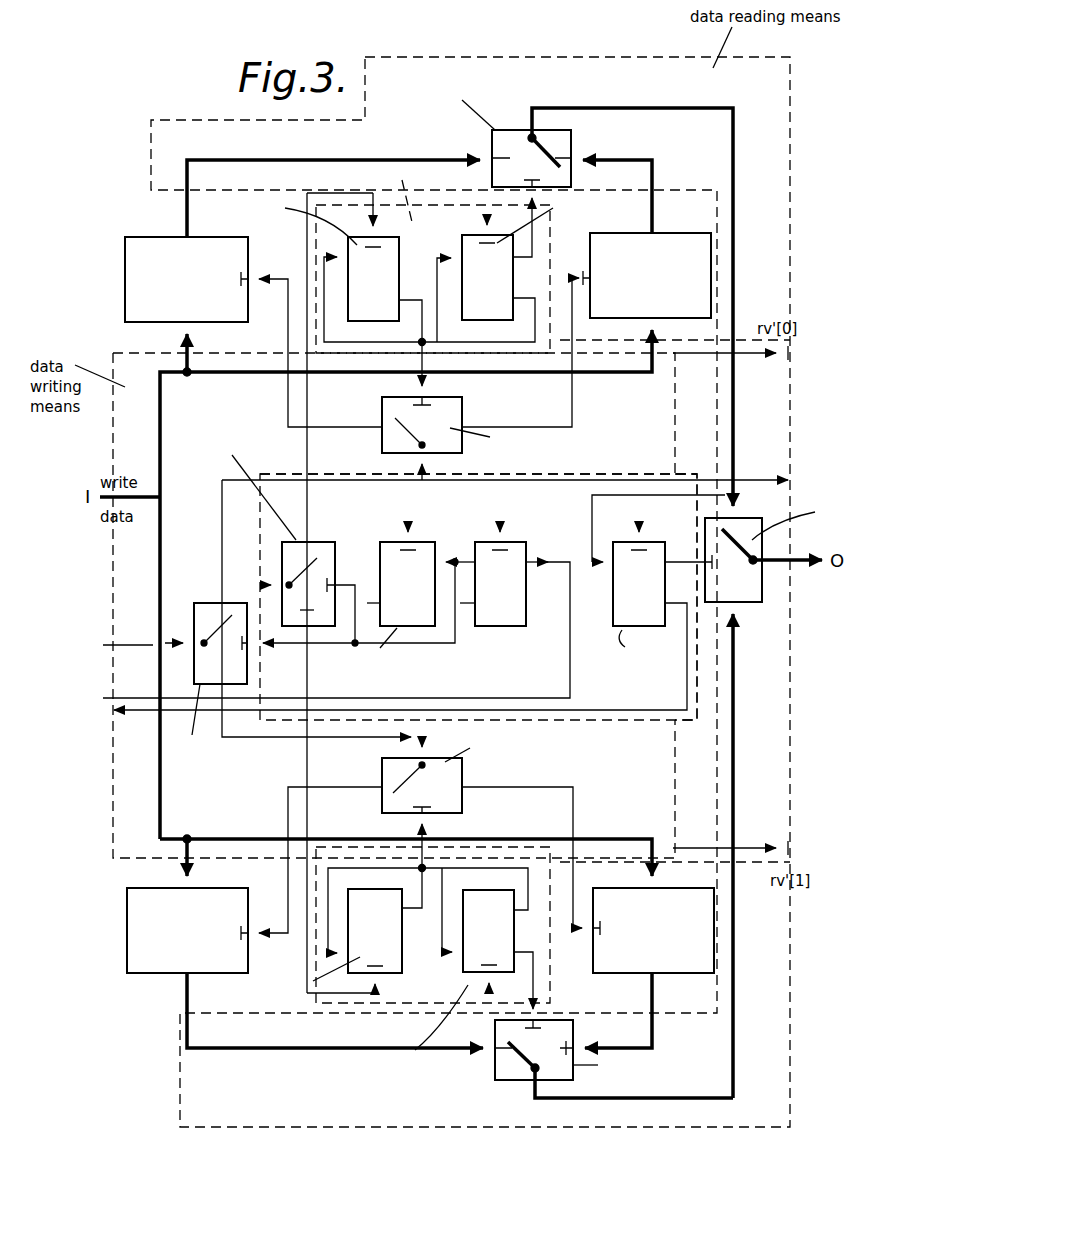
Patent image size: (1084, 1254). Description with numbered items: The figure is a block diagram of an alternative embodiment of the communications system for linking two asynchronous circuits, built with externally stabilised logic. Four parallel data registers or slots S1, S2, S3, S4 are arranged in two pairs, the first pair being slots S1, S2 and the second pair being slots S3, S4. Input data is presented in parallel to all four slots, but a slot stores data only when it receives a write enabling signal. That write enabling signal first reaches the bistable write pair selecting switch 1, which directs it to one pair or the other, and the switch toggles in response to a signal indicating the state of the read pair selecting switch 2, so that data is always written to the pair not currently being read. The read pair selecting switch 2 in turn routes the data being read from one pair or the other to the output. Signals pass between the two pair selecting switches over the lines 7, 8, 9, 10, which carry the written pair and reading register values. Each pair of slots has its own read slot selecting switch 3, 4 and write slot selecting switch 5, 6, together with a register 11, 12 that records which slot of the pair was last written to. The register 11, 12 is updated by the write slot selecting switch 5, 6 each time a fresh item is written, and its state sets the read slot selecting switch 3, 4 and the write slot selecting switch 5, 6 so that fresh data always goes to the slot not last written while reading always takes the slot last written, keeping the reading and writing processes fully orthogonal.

The write pair selecting switch 1 is at (232, 662).
The read pair selecting switch 2 is at (762, 600).
The read slot selecting switch 3 is at (510, 130).
The read slot selecting switch 4 is at (500, 1062).
The write slot selecting switch 5 is at (450, 435).
The write slot selecting switch 6 is at (432, 760).
The line 7 is at (261, 593).
The line 8 is at (472, 628).
The line 9 is at (570, 482).
The line 10 is at (688, 548).
The register 11 is at (403, 259).
The register 12 is at (395, 1003).
The slot S1 is at (142, 237).
The slot S2 is at (698, 233).
The slot S3 is at (147, 964).
The slot S4 is at (690, 966).